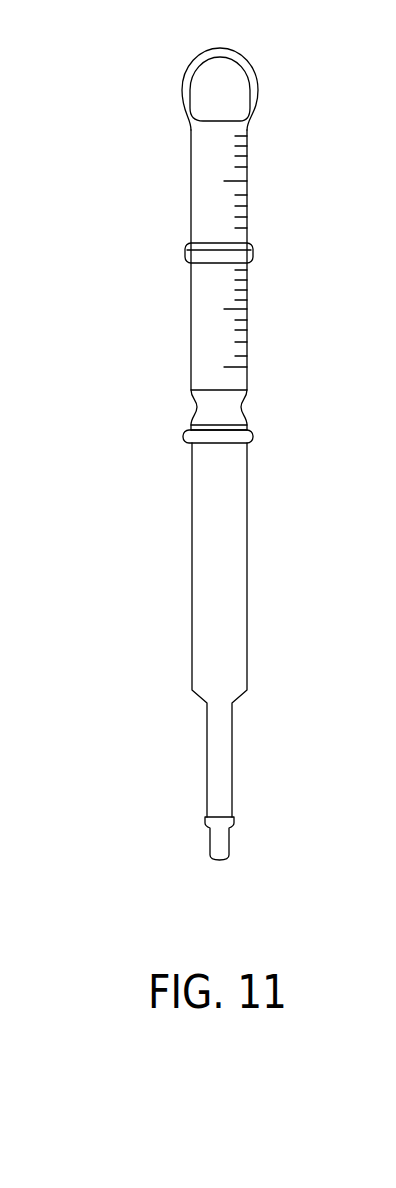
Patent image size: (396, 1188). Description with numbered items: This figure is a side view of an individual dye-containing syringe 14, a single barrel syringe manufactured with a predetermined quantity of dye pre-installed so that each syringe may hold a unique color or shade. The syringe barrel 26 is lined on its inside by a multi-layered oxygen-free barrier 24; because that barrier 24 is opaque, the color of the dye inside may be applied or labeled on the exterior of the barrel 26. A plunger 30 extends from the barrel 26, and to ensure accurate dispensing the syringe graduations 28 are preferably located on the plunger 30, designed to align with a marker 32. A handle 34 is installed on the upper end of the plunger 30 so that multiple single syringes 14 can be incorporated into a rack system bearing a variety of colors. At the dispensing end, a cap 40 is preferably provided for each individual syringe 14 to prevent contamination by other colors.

The syringe 14 is at (116, 115).
The handle 34 is at (255, 82).
The syringe graduations 28 is at (257, 183).
The plunger 30 is at (180, 250).
The marker 32 is at (253, 250).
The multi-layered oxygen-free barrier 24 is at (183, 435).
The barrel 26 is at (186, 580).
The cap 40 is at (212, 823).